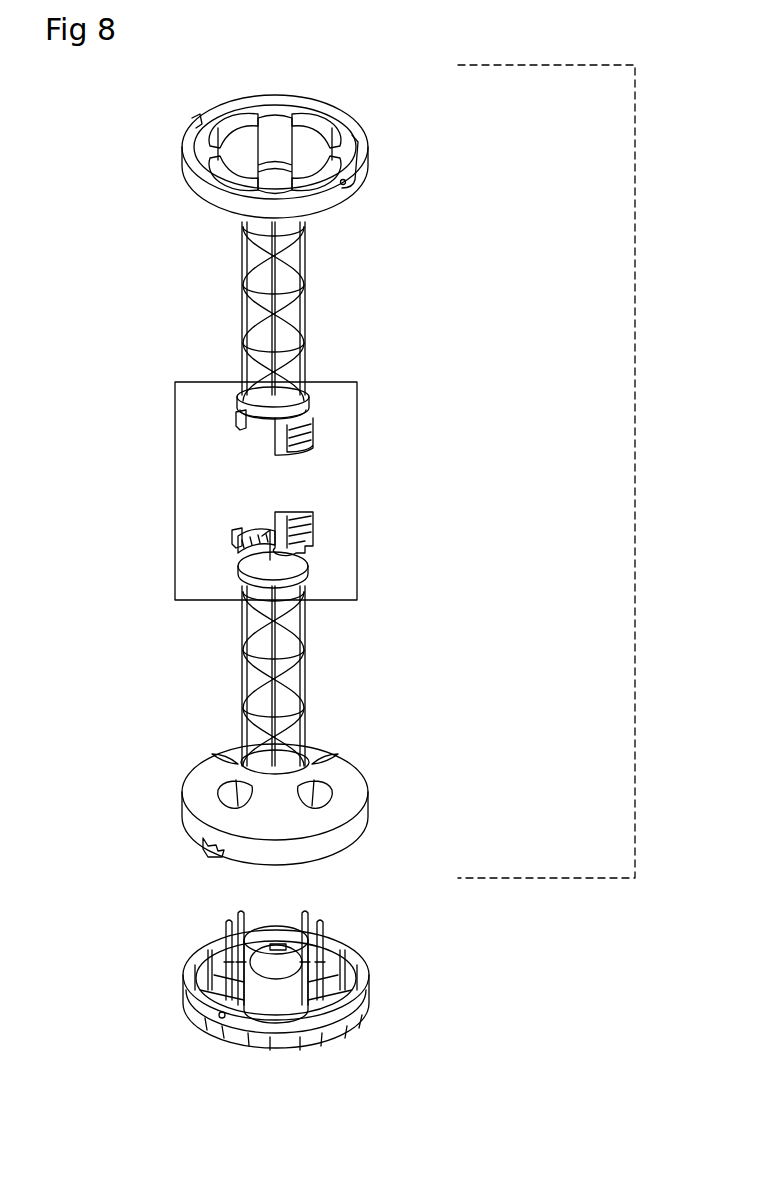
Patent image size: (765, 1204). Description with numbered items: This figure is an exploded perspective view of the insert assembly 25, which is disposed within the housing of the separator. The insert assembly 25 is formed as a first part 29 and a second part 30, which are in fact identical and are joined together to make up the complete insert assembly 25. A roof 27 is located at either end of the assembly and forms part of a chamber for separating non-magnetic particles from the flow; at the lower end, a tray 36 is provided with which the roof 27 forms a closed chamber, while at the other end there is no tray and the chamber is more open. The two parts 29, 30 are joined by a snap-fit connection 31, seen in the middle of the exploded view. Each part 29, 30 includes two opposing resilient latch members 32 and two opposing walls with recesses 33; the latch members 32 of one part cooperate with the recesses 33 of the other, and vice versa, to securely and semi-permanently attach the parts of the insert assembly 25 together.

The insert assembly 25 is at (637, 487).
The roof 27 is at (343, 162).
The first part 29 is at (287, 318).
The second part 30 is at (282, 708).
The snap-fit connection 31 is at (358, 507).
The resilient latch member 32 is at (259, 427).
The recess 33 is at (233, 421).
The tray 36 is at (312, 1018).